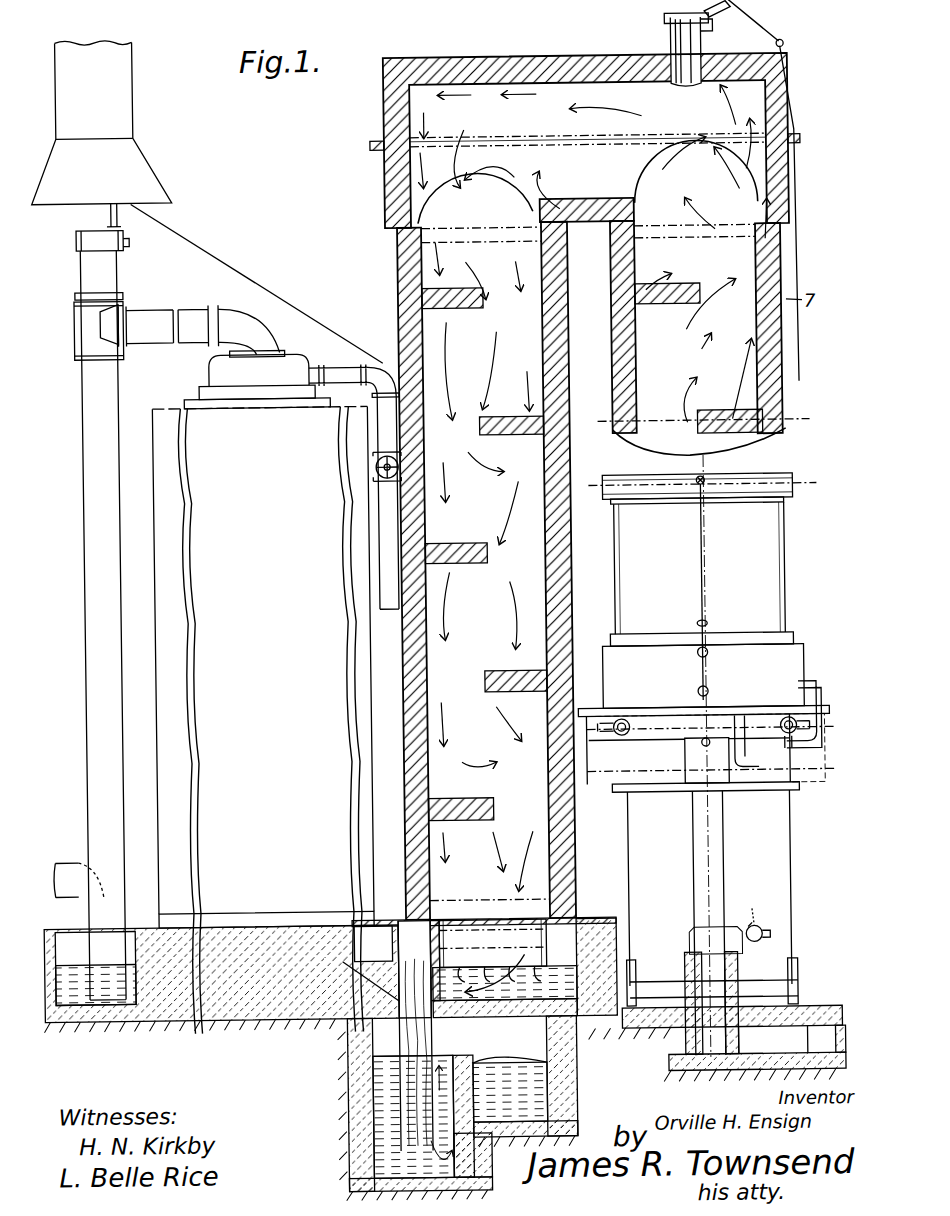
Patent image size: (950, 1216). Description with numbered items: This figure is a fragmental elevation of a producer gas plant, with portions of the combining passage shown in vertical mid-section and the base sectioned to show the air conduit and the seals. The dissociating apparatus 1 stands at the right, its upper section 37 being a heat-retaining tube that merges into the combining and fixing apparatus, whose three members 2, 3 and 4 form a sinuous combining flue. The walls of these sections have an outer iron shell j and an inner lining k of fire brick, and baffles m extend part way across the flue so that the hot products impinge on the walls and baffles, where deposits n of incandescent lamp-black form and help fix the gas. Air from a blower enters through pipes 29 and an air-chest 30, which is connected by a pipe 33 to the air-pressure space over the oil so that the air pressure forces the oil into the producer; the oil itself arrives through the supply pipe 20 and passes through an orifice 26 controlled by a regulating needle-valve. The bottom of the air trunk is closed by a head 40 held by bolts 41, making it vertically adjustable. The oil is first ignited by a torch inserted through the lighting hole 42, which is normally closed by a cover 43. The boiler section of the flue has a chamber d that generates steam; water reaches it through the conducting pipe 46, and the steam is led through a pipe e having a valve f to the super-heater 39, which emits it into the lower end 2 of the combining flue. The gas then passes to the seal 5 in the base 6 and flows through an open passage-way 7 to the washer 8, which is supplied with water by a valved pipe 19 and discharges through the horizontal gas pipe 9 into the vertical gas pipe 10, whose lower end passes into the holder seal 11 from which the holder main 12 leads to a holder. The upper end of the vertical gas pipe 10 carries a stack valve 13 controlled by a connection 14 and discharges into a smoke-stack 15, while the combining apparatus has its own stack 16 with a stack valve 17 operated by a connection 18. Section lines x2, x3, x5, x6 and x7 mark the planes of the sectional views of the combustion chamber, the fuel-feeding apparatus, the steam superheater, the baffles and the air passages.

The dissociating apparatus 1 is at (795, 828).
The combining and fixing apparatus member 2 is at (697, 297).
The combining and fixing apparatus member 3 is at (585, 141).
The combining and fixing apparatus member 4 is at (519, 546).
The seal 5 is at (504, 960).
The base 6 is at (524, 967).
The open passage-way 7 is at (392, 942).
The washer 8 is at (264, 691).
The horizontal gas pipe 9 is at (195, 308).
The vertical gas pipe 10 is at (115, 392).
The holder seal 11 is at (95, 968).
The holder main 12 is at (70, 862).
The stack valve 13 is at (92, 228).
The connection 14 is at (282, 298).
The smoke-stack 15 is at (133, 163).
The stack 16 is at (676, 43).
The stack valve 17 is at (680, 18).
The connection 18 is at (760, 22).
The valved pipe 19 is at (357, 367).
The supply pipe 20 is at (705, 741).
The orifice 26 is at (620, 721).
The pipes 29 is at (715, 863).
The air-chest 30 is at (690, 761).
The pipe 33 is at (754, 744).
The upper section 37 is at (701, 574).
The super-heater 39 is at (770, 500).
The head 40 is at (760, 990).
The bolts 41 is at (632, 990).
The lighting hole 42 is at (746, 907).
The cover 43 is at (756, 932).
The conducting pipe 46 is at (814, 686).
The chamber d is at (704, 676).
The pipe e is at (704, 545).
The valve f is at (712, 482).
The outer iron shell j is at (614, 343).
The inner lining k is at (428, 352).
The baffles m is at (487, 298).
The deposits n is at (530, 866).
The section line x2- x2 is at (709, 763).
The section line x3- x3 is at (826, 700).
The section line x5- x5 is at (820, 506).
The section line x6- x6 is at (814, 445).
The section line x7- x7 is at (826, 796).